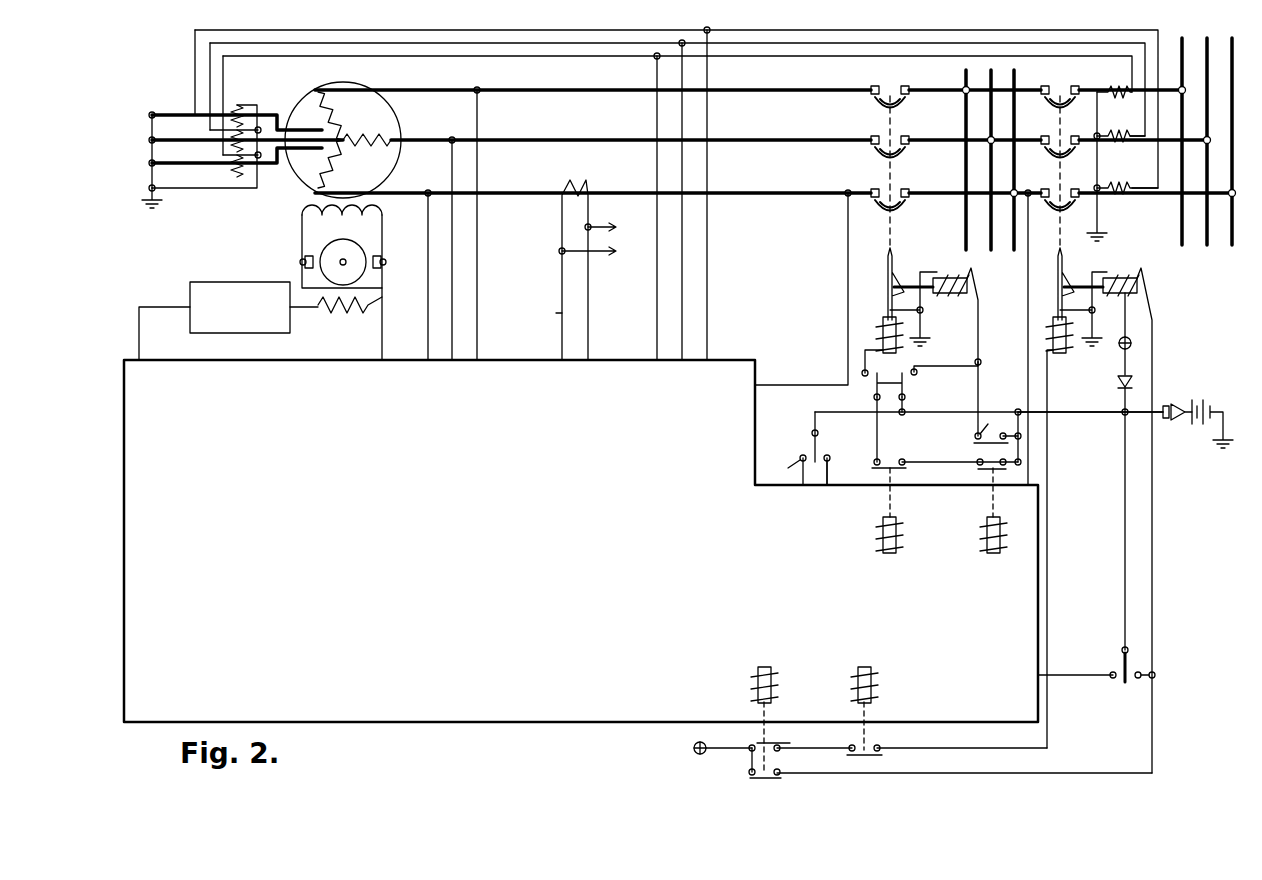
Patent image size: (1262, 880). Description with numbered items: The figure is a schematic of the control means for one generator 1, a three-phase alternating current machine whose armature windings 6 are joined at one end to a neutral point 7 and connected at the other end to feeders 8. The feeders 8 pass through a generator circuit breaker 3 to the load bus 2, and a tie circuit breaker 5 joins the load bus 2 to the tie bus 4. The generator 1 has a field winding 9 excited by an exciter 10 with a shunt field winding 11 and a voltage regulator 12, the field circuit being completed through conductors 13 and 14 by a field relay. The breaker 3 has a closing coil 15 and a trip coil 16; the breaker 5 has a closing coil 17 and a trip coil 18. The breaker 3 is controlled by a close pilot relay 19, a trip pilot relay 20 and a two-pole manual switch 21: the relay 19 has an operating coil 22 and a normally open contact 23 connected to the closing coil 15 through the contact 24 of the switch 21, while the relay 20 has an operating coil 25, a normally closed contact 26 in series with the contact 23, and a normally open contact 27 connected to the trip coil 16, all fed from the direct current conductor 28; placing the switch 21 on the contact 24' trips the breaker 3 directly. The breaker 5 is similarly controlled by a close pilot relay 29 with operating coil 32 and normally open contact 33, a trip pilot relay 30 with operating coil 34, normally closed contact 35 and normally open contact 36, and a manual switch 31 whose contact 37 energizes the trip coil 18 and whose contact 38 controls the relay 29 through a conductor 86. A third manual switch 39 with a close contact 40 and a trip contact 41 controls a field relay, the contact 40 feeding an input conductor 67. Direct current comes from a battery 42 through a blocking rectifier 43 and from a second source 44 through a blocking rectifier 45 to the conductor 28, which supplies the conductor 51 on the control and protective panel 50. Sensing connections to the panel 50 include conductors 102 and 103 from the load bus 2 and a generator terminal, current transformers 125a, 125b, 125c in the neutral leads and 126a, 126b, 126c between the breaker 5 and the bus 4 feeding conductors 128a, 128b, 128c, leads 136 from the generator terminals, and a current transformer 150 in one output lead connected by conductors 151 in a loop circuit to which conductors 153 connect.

The generator 1 is at (342, 139).
The load bus 2 is at (1012, 86).
The generator circuit breaker 3 is at (918, 232).
The tie bus 4 is at (1232, 245).
The tie circuit breaker 5 is at (1053, 244).
The armature windings 6 is at (348, 133).
The neutral point 7 is at (150, 148).
The feeders 8 is at (592, 88).
The field winding 9 is at (332, 222).
The exciter 10 is at (338, 248).
The shunt field winding 11 is at (347, 307).
The voltage regulator 12 is at (240, 282).
The conductor 13 is at (139, 307).
The conductor 14 is at (382, 335).
The closing coil 15 is at (883, 325).
The trip coil 16 is at (955, 295).
The closing coil 17 is at (1053, 325).
The trip coil 18 is at (1130, 280).
The close pilot relay 19 is at (867, 524).
The trip pilot relay 20 is at (978, 512).
The two-pole manual switch 21 is at (867, 398).
The operating coil 22 is at (896, 535).
The normally open contact 23 is at (895, 463).
The contact 24 is at (841, 372).
The contact 24' is at (946, 373).
The operating coil 25 is at (985, 535).
The normally closed contact 26 is at (983, 465).
The normally open contact 27 is at (983, 436).
The direct current conductor 28 is at (1094, 412).
The close pilot relay 29 is at (900, 716).
The trip pilot relay 30 is at (800, 716).
The manual switch 31 is at (1122, 662).
The operating coil 32 is at (858, 688).
The normally open contact 33 is at (877, 757).
The operating coil 34 is at (758, 688).
The normally closed contact 35 is at (775, 746).
The normally open contact 36 is at (752, 776).
The contact 37 is at (1137, 680).
The contact 38 is at (1110, 678).
The third manual switch 39 is at (812, 441).
The reset or close contact 40 is at (828, 462).
The trip contact 41 is at (790, 466).
The battery 42 is at (1198, 406).
The blocking rectifier 43 is at (1170, 406).
The second source of direct current 44 is at (1125, 337).
The blocking rectifier 45 is at (1118, 378).
The control and protective panel 50 is at (524, 722).
The direct current supply conductor 51 is at (1018, 476).
The input conductor 67 is at (828, 482).
The conductor 86 is at (1085, 675).
The conductor 102 is at (1028, 385).
The conductor 103 is at (792, 385).
The current transformer 125a is at (230, 108).
The current transformer 125b is at (232, 142).
The current transformer 125c is at (232, 166).
The current transformer 126a is at (1136, 84).
The current transformer 126b is at (1110, 150).
The current transformer 126c is at (1120, 200).
The conductor 128a is at (657, 305).
The conductor 128b is at (682, 327).
The conductor 128c is at (707, 327).
The leads 136 is at (452, 319).
The current transformer 150 is at (577, 184).
The conductors 151 is at (605, 232).
The conductors 153 is at (562, 313).